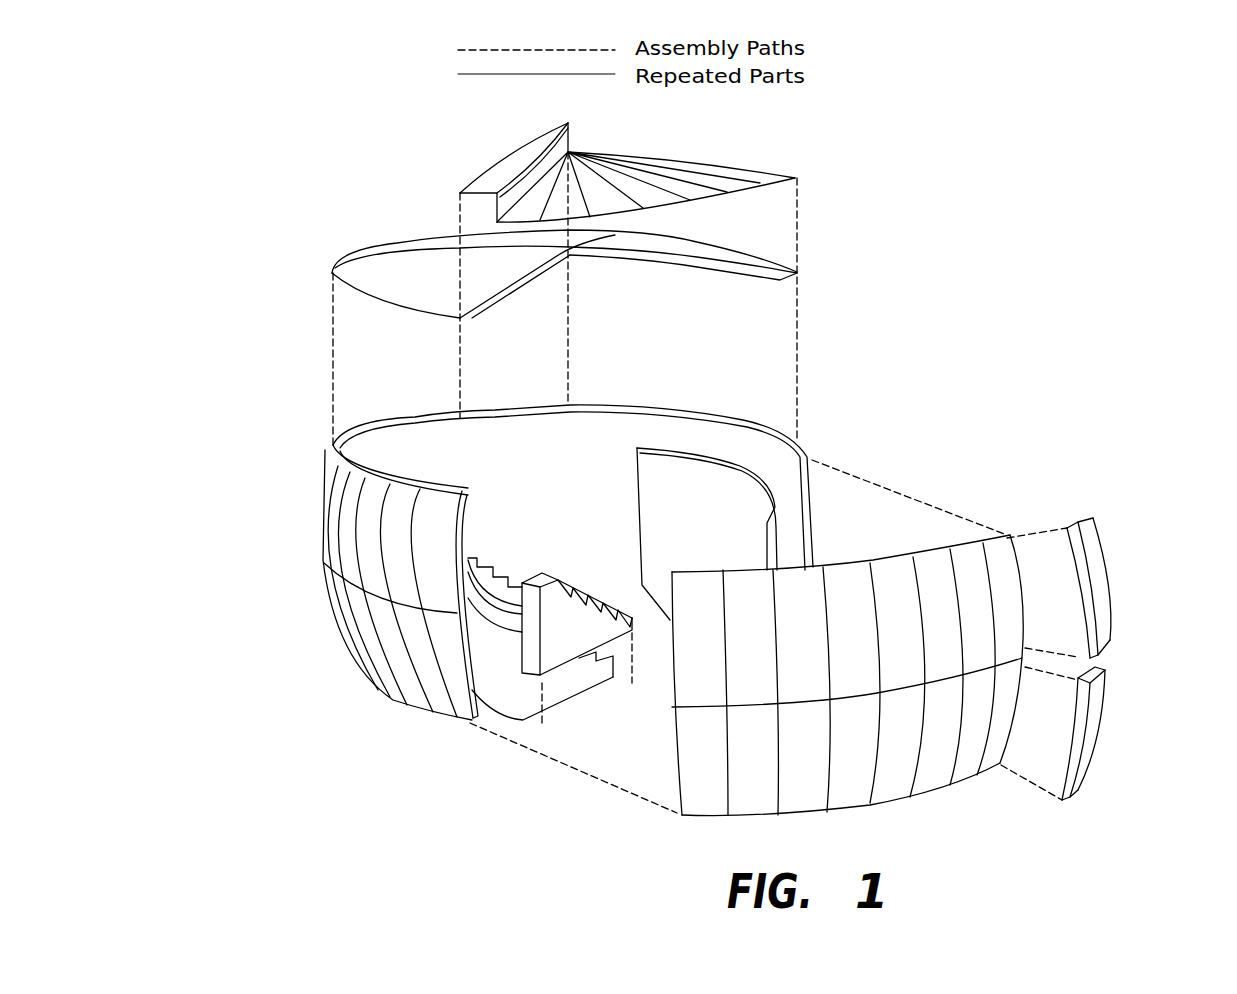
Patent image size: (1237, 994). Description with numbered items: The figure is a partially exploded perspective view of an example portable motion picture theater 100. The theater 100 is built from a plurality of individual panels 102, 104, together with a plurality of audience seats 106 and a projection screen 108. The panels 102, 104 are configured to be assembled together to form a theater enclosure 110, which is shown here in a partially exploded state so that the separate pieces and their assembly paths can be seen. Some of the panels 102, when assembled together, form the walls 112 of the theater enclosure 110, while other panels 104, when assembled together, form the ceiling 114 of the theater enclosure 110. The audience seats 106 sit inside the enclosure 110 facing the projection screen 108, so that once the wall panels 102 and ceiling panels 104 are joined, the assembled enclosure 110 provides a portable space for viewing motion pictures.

The portable motion picture theater 100 is at (997, 196).
The panels 102 is at (1090, 518).
The panels 104 is at (466, 182).
The audience seats 106 is at (612, 600).
The projection screen 108 is at (760, 472).
The theater enclosure 110 is at (390, 700).
The walls 112 is at (887, 805).
The ceiling 114 is at (332, 273).